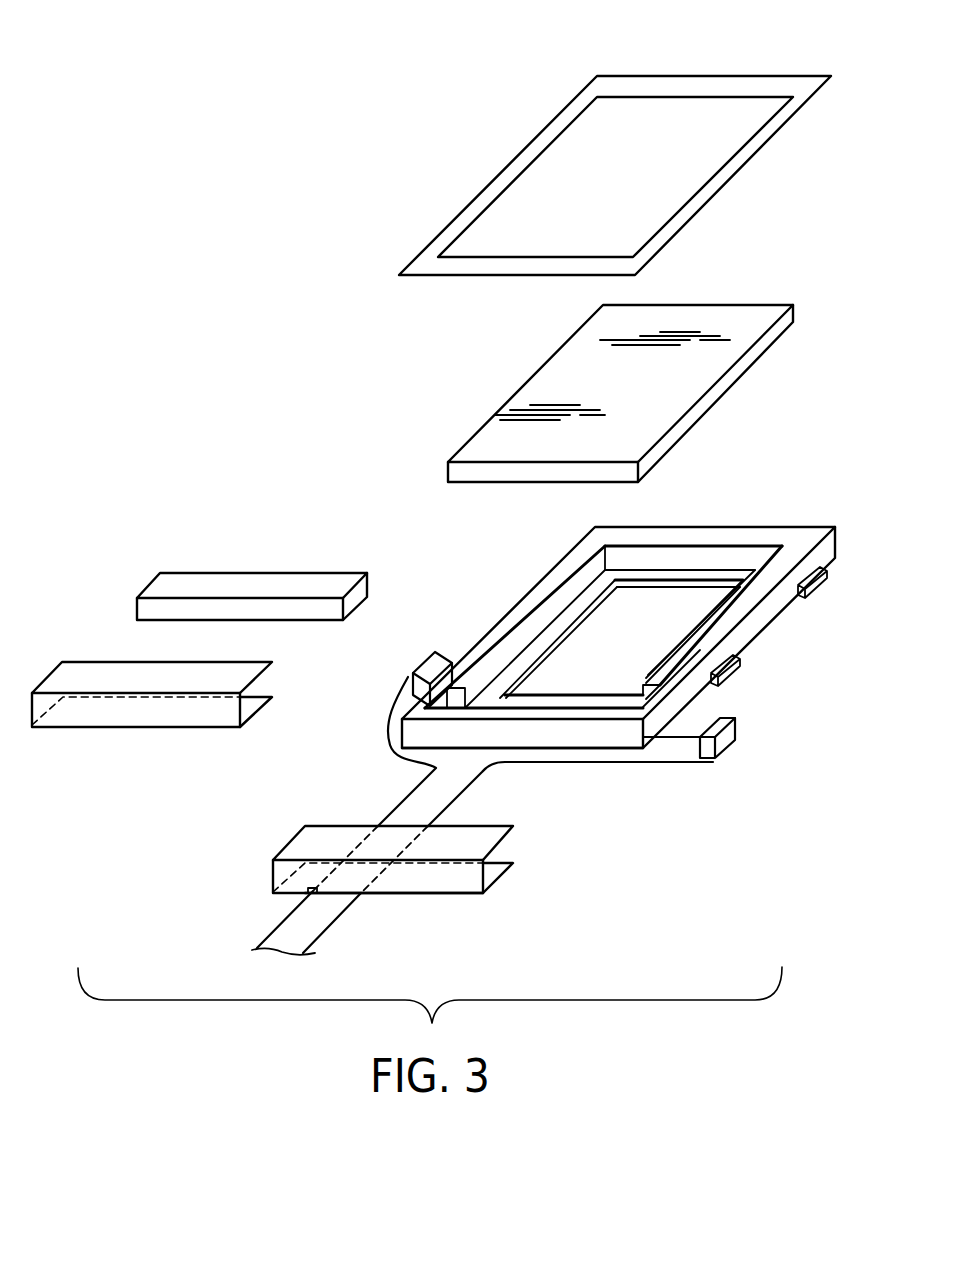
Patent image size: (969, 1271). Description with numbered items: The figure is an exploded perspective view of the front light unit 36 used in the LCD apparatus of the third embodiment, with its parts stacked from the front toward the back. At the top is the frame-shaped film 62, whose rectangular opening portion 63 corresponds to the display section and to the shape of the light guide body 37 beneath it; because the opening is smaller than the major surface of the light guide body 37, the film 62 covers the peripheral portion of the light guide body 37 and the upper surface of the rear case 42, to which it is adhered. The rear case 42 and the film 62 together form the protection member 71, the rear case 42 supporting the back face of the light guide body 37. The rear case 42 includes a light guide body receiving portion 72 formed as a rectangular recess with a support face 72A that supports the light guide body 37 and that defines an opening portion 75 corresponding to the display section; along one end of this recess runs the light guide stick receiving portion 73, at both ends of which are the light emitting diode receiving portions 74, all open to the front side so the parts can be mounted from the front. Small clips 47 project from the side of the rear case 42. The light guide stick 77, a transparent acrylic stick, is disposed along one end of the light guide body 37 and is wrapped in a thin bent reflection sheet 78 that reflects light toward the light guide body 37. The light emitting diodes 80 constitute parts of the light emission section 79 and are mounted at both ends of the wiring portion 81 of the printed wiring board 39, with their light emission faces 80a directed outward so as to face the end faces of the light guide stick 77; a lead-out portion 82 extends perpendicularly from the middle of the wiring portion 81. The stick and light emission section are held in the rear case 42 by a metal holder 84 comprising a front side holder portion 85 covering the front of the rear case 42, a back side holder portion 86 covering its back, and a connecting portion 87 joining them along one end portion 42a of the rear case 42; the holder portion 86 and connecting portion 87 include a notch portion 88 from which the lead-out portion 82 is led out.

The front light unit 36 is at (345, 373).
The light guide body 37 is at (698, 382).
The printed wiring board 39 is at (378, 816).
The rear case 42 is at (833, 546).
The end portion of rear case 42a is at (592, 738).
The engaging clips 47 is at (822, 587).
The frame-shaped film 62 is at (735, 82).
The opening portion 63 is at (664, 95).
The protection member 71 is at (643, 410).
The light guide body receiving portion 72 is at (720, 572).
The support face 72A is at (575, 608).
The light guide stick receiving portion 73 is at (573, 695).
The light emitting diode receiving portions 74 is at (460, 688).
The opening portion 75 is at (670, 578).
The light guide stick 77 is at (207, 573).
The reflection sheet 78 is at (88, 660).
The light emission section 79 is at (640, 767).
The light emitting diodes 80 is at (577, 709).
The light emission faces 80a is at (440, 657).
The wiring portion 81 is at (538, 757).
The lead-out portion 82 is at (448, 800).
The holder 84 is at (411, 888).
The front side holder portion 85 is at (495, 840).
The back side holder portion 86 is at (495, 875).
The connecting portion 87 is at (432, 887).
The notch portion 88 is at (363, 893).